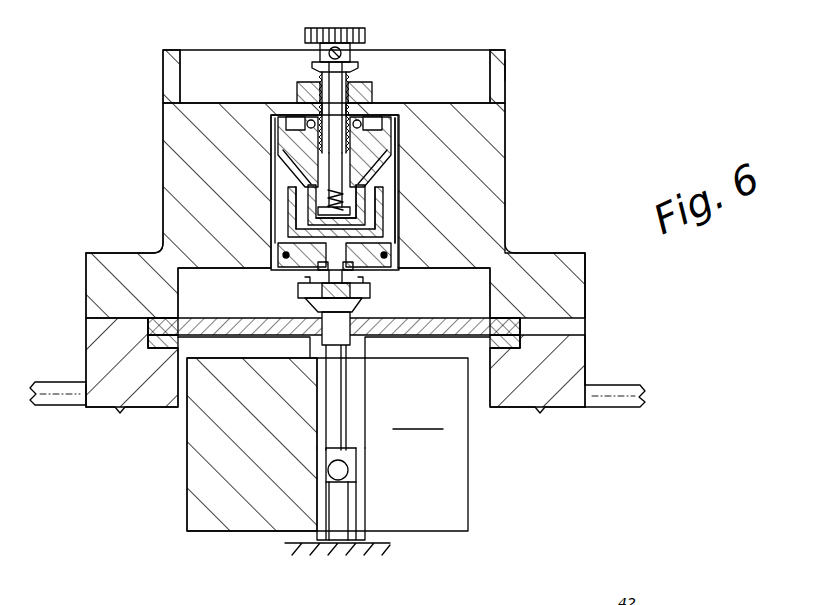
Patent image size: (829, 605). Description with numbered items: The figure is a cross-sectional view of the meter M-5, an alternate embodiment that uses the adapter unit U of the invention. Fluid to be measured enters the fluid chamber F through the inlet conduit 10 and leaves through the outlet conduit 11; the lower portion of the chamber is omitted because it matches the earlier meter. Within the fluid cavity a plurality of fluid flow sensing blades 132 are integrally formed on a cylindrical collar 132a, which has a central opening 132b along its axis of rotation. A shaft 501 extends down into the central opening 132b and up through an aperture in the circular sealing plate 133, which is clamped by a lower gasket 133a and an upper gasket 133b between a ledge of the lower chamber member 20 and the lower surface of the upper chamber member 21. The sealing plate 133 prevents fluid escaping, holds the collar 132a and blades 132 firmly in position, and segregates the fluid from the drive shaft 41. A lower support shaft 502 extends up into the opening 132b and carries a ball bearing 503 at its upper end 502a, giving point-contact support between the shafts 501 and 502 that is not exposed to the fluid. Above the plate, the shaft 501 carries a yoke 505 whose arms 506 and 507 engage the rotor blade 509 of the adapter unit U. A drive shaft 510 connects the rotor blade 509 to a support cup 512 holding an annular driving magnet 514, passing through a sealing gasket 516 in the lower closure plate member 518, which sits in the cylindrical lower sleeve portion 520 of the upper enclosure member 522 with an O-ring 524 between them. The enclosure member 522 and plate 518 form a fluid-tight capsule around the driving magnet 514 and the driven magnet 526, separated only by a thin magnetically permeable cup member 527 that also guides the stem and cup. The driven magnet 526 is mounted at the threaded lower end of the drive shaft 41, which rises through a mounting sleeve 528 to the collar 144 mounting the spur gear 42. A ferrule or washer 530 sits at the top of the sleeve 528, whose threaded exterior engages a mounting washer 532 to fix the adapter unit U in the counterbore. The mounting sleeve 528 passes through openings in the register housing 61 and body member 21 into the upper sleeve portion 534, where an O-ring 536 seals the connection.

The inlet conduit 10 is at (57, 393).
The outlet conduit 11 is at (646, 396).
The lower chamber member 20 is at (570, 352).
The upper chamber member 21 is at (490, 163).
The drive shaft 41 is at (326, 85).
The spur gear 42 is at (305, 38).
The register housing 61 is at (506, 72).
The collar 144 is at (352, 55).
The adapter unit U is at (480, 138).
The fluid chamber F is at (592, 378).
The meter M-5 is at (592, 300).
The fluid flow sensing blades 132 is at (200, 445).
The cylindrical collar 132a is at (362, 517).
The central opening 132b is at (317, 507).
The circular sealing plate 133 is at (445, 336).
The lower gasket 133a is at (515, 344).
The upper gasket 133b is at (512, 328).
The shaft 501 is at (330, 413).
The lower support shaft 502 is at (337, 533).
The upper end 502a is at (340, 495).
The ball bearing 503 is at (348, 468).
The yoke 505 is at (374, 290).
The arm 506 is at (362, 306).
The arm 507 is at (305, 308).
The rotor blade 509 is at (298, 290).
The drive shaft 510 is at (383, 222).
The support cup 512 is at (392, 190).
The annular driving magnet 514 is at (383, 206).
The sealing gasket 516 is at (296, 273).
The lower closure plate member 518 is at (396, 242).
The cylindrical lower sleeve portion 520 is at (268, 216).
The upper enclosure member 522 is at (308, 205).
The O-ring 524 is at (290, 245).
The driven magnet 526 is at (296, 200).
The cup member 527 is at (288, 190).
The mounting sleeve 528 is at (368, 98).
The ferrule or washer 530 is at (313, 67).
The mounting washer 532 is at (370, 84).
The upper sleeve portion 534 is at (298, 138).
The O-ring 536 is at (305, 120).